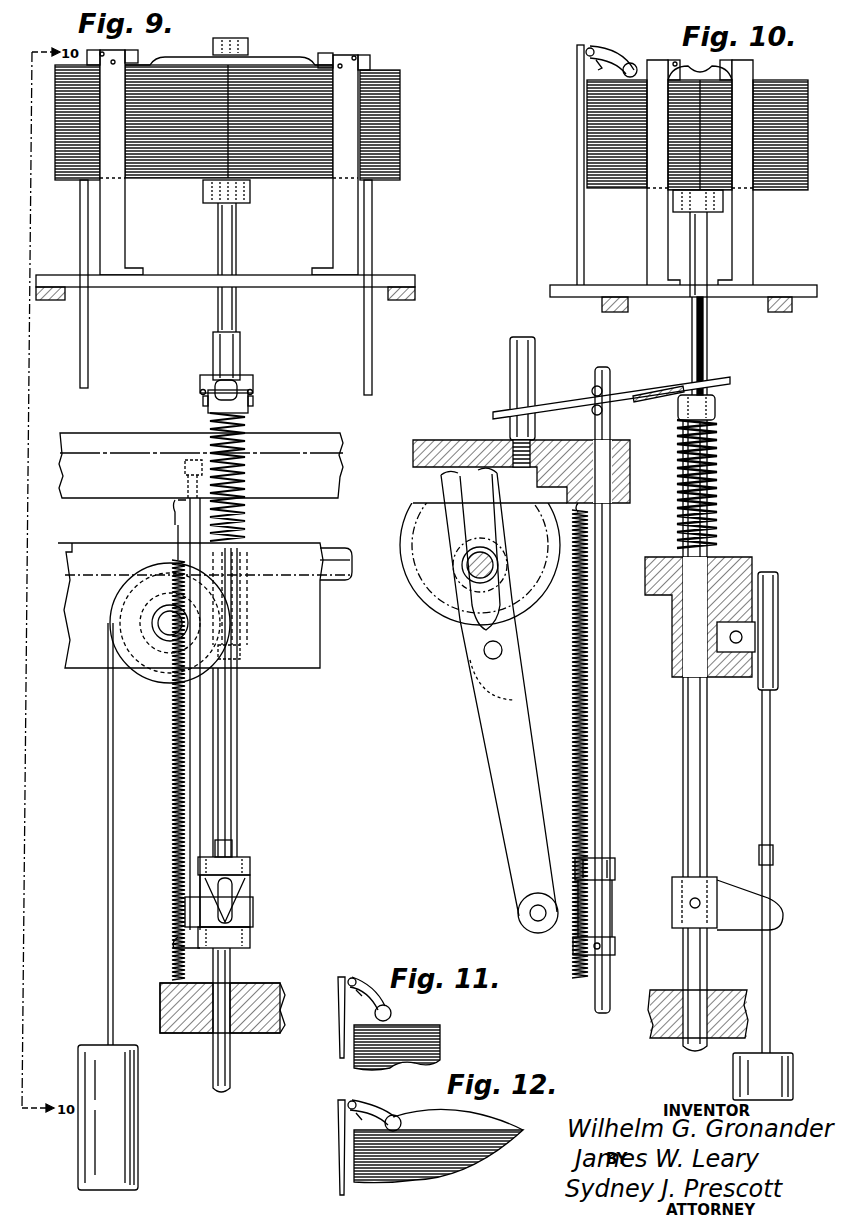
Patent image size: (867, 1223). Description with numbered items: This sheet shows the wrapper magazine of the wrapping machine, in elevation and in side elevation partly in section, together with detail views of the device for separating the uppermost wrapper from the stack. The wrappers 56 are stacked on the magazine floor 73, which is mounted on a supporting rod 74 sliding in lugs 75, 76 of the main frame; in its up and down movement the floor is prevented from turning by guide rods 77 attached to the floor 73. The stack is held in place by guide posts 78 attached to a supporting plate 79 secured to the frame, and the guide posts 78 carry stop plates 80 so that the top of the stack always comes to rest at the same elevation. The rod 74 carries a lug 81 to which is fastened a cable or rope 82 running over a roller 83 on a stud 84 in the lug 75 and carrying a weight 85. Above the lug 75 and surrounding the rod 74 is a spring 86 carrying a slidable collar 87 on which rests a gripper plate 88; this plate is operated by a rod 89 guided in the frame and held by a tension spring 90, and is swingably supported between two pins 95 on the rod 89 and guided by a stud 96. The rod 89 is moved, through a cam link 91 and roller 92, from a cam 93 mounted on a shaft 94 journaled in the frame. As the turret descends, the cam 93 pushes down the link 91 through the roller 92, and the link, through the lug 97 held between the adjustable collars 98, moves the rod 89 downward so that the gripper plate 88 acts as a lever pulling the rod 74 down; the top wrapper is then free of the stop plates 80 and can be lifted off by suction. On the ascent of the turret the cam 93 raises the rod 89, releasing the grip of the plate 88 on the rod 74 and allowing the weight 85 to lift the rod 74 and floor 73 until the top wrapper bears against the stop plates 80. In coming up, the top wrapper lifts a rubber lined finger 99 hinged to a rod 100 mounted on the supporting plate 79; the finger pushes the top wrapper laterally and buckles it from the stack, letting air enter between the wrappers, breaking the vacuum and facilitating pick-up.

In FIG. 9, the drum 56 is at (400, 92).
In FIG. 10, the drum 56 is at (795, 80).
In FIG. 11, the drum 56 is at (478, 1027).
In FIG. 12, the drum 56 is at (523, 1133).
In FIG. 9, the magazine floor 73 is at (380, 183).
In FIG. 10, the magazine floor 73 is at (795, 190).
In FIG. 9, the supporting rod 74 is at (236, 238).
In FIG. 10, the supporting rod 74 is at (672, 778).
In FIG. 9, the lug 75 is at (318, 672).
In FIG. 10, the lug 75 is at (740, 556).
In FIG. 9, the lug 76 is at (272, 988).
In FIG. 10, the lug 76 is at (706, 996).
In FIG. 9, the guide rods 77 is at (88, 381).
In FIG. 10, the guide rods 77 is at (692, 348).
In FIG. 9, the guide posts 78 is at (125, 238).
In FIG. 10, the guide posts 78 is at (647, 243).
In FIG. 9, the supporting plate 79 is at (410, 282).
In FIG. 10, the supporting plate 79 is at (658, 298).
In FIG. 9, the stop plates 80 is at (138, 56).
In FIG. 10, the stop plates 80 is at (670, 66).
In FIG. 9, the lug 81 is at (253, 921).
In FIG. 10, the lug 81 is at (728, 882).
In FIG. 9, the cable or rope 82 is at (226, 818).
In FIG. 10, the cable or rope 82 is at (760, 785).
In FIG. 9, the roller 83 is at (148, 676).
In FIG. 10, the roller 83 is at (779, 690).
In FIG. 9, the stud 84 is at (162, 608).
In FIG. 10, the stud 84 is at (757, 632).
In FIG. 9, the weight 85 is at (78, 1090).
In FIG. 10, the weight 85 is at (788, 1056).
In FIG. 9, the spring 86 is at (246, 530).
In FIG. 10, the spring 86 is at (718, 500).
In FIG. 9, the slidable collar 87 is at (249, 405).
In FIG. 10, the slidable collar 87 is at (716, 411).
In FIG. 9, the gripper plate 88 is at (253, 383).
In FIG. 10, the gripper plate 88 is at (652, 394).
In FIG. 10, the rod 89 is at (610, 723).
In FIG. 9, the tension spring 90 is at (172, 853).
In FIG. 10, the tension spring 90 is at (580, 690).
In FIG. 9, the cam link 91 is at (192, 782).
In FIG. 10, the cam link 91 is at (500, 806).
In FIG. 9, the roller 92 is at (240, 656).
In FIG. 10, the roller 92 is at (505, 652).
In FIG. 9, the cam 93 is at (246, 588).
In FIG. 10, the cam 93 is at (436, 618).
In FIG. 9, the shaft 94 is at (325, 552).
In FIG. 10, the shaft 94 is at (494, 560).
In FIG. 10, the pins 95 is at (592, 391).
In FIG. 9, the stud 96 is at (242, 350).
In FIG. 10, the stud 96 is at (536, 355).
In FIG. 9, the lug 97 is at (252, 894).
In FIG. 10, the lug 97 is at (562, 936).
In FIG. 9, the adjustable collars 98 is at (250, 864).
In FIG. 10, the adjustable collars 98 is at (615, 867).
In FIG. 9, the rubber lined finger 99 is at (248, 47).
In FIG. 10, the rubber lined finger 99 is at (626, 58).
In FIG. 11, the rubber lined finger 99 is at (391, 1012).
In FIG. 12, the rubber lined finger 99 is at (370, 1112).
In FIG. 10, the rod 100 is at (577, 240).
In FIG. 11, the rod 100 is at (340, 1000).
In FIG. 12, the rod 100 is at (340, 1145).